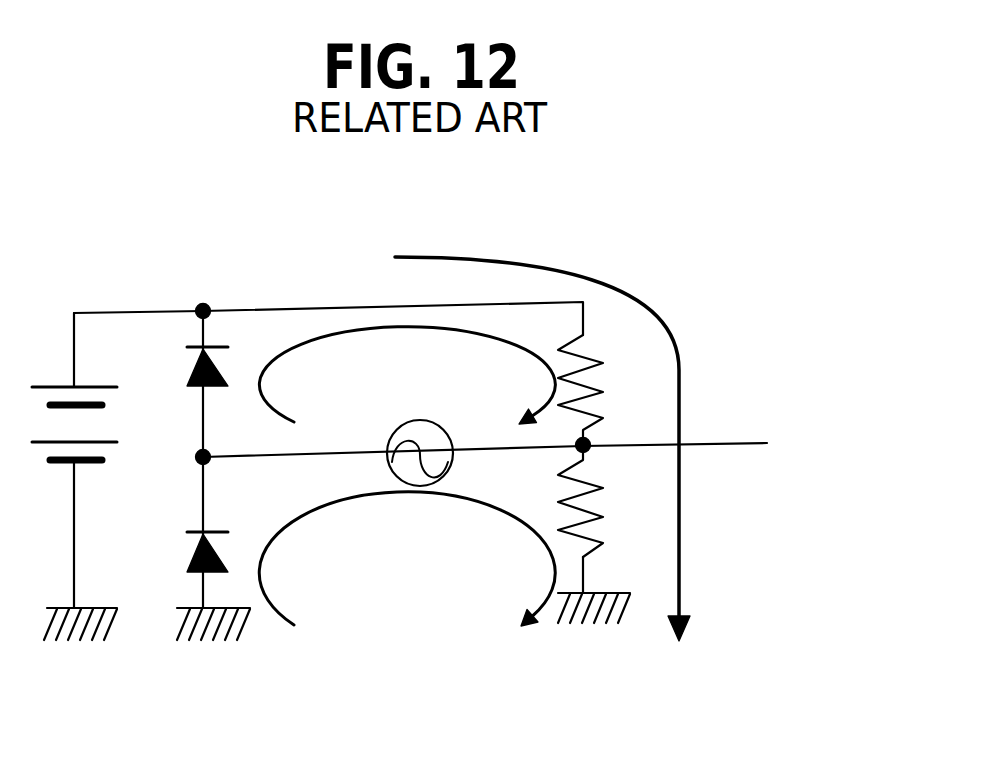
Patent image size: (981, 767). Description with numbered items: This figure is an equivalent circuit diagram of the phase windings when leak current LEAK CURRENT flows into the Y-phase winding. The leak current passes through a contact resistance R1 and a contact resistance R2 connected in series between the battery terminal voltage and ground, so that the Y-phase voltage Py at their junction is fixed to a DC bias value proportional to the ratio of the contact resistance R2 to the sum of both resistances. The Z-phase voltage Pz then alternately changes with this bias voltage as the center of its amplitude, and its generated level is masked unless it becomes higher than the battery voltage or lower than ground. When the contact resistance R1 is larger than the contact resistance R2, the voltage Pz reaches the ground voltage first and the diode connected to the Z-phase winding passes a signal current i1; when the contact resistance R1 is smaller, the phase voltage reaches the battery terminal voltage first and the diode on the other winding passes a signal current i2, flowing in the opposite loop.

The contact resistance R1 is at (603, 386).
The contact resistance R2 is at (603, 504).
The phase voltage Py is at (680, 366).
The phase voltage Pz is at (160, 421).
The signal current i1 is at (407, 559).
The signal current i2 is at (407, 375).
The leak current LEAK CURRENT is at (641, 412).